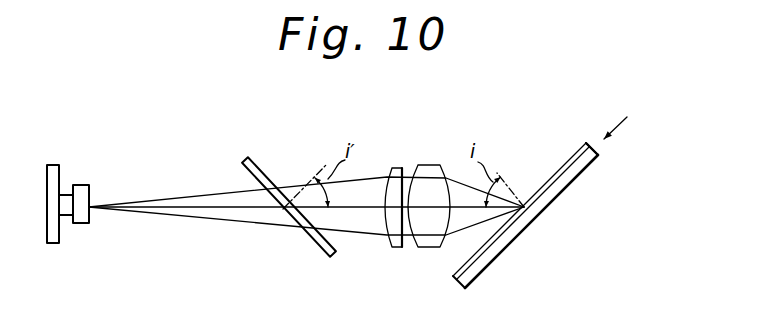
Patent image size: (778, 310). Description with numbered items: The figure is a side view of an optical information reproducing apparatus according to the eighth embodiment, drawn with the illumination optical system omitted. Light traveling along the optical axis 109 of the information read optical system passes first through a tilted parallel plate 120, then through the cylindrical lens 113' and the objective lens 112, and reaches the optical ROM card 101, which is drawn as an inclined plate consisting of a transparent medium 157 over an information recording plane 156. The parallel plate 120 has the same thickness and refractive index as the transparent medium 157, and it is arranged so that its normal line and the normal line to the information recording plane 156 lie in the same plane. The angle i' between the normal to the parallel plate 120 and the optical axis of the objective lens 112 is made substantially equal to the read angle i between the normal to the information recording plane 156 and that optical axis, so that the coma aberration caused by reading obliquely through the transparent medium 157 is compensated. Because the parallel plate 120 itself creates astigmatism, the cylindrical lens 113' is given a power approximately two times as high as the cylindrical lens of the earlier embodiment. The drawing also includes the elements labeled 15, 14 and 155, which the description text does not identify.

The light source / base plate 15 is at (53, 164).
The light emitting element 14 is at (90, 184).
The parallel plate 120 is at (243, 159).
The optical axis of information read optical system 109 is at (357, 214).
The cylindrical lens 113' is at (391, 183).
The objective lens 112 is at (442, 164).
The optical ROM card 101 is at (633, 119).
The transparent medium 157 is at (565, 162).
The information recording plane 156 is at (593, 163).
The mirror substrate 155 is at (567, 178).